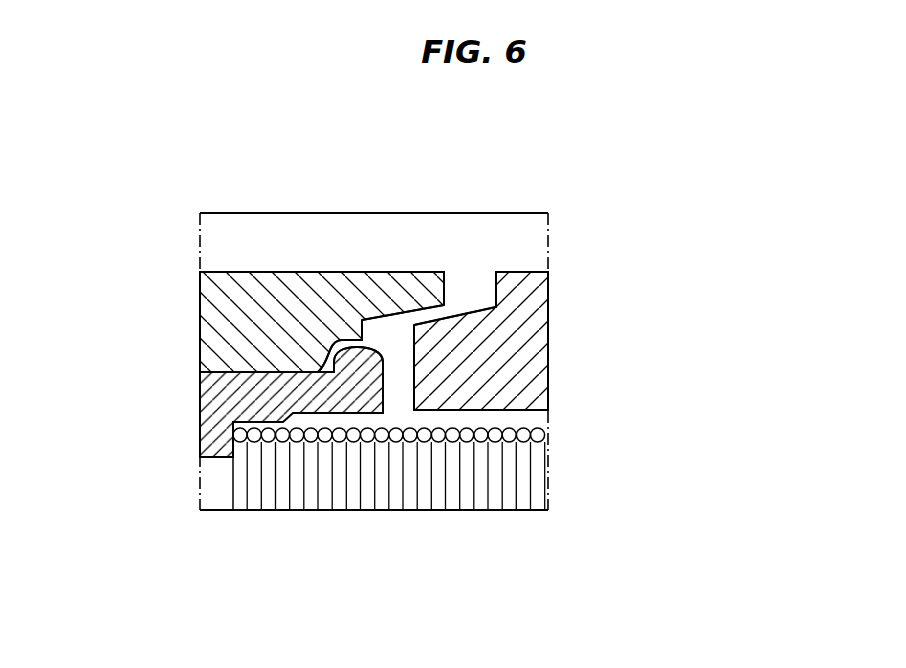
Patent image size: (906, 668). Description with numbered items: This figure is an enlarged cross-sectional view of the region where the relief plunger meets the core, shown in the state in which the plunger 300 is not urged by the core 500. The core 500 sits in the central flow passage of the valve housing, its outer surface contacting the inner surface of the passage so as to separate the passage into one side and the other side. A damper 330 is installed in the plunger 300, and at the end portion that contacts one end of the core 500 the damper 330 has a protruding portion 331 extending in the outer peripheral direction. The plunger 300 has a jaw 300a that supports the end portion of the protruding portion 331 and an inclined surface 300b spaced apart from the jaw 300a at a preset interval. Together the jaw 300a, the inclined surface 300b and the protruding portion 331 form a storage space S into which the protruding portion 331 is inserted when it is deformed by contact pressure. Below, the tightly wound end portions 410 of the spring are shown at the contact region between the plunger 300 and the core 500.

The plunger 300 is at (245, 318).
The jaw 300a is at (405, 318).
The inclined surface 300b is at (343, 352).
The damper 330 is at (235, 392).
The protruding portion 331 is at (367, 358).
The core 500 is at (520, 364).
The both end portions 410 is at (522, 477).
The storage space S is at (330, 345).